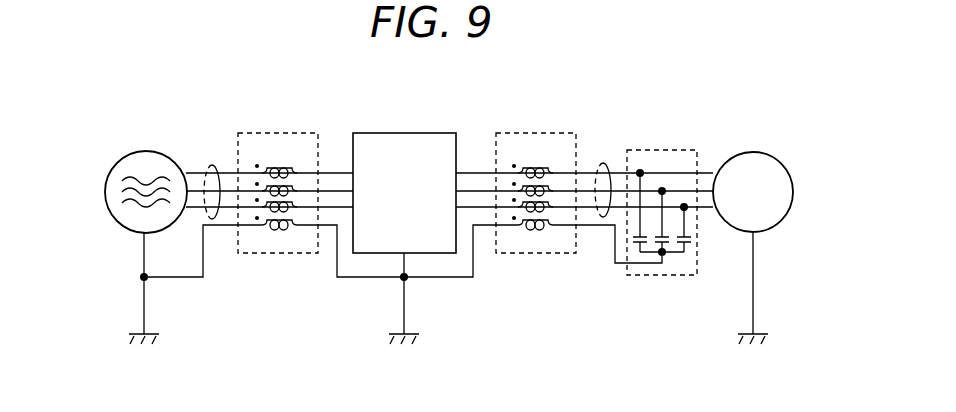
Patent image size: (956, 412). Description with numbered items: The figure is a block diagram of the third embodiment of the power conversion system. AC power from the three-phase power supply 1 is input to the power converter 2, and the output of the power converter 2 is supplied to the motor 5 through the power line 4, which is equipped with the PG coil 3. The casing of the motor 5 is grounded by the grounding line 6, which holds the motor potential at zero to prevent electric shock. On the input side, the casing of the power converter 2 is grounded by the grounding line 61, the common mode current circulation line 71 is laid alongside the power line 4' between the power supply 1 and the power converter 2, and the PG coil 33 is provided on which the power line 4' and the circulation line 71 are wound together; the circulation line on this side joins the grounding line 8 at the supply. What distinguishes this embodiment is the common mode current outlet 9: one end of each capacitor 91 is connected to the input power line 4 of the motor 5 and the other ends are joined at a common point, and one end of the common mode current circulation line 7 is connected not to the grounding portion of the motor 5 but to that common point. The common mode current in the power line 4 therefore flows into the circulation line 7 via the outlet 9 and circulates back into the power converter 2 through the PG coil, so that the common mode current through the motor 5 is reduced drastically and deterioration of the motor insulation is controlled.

The three-phase power supply 1 is at (131, 162).
The power line 4' is at (214, 163).
The PG coil 33 is at (272, 133).
The power converter 2 is at (410, 133).
The PG coil 3 is at (525, 133).
The power line 4 is at (603, 162).
The common mode current outlet 9 is at (665, 150).
The capacitor 91 is at (650, 245).
The common mode current circulation line 7 is at (597, 228).
The common mode current circulation line 71 is at (184, 278).
The grounding line 8 is at (144, 301).
The grounding line 61 is at (406, 307).
The motor 5 is at (765, 152).
The grounding line 6 is at (755, 283).